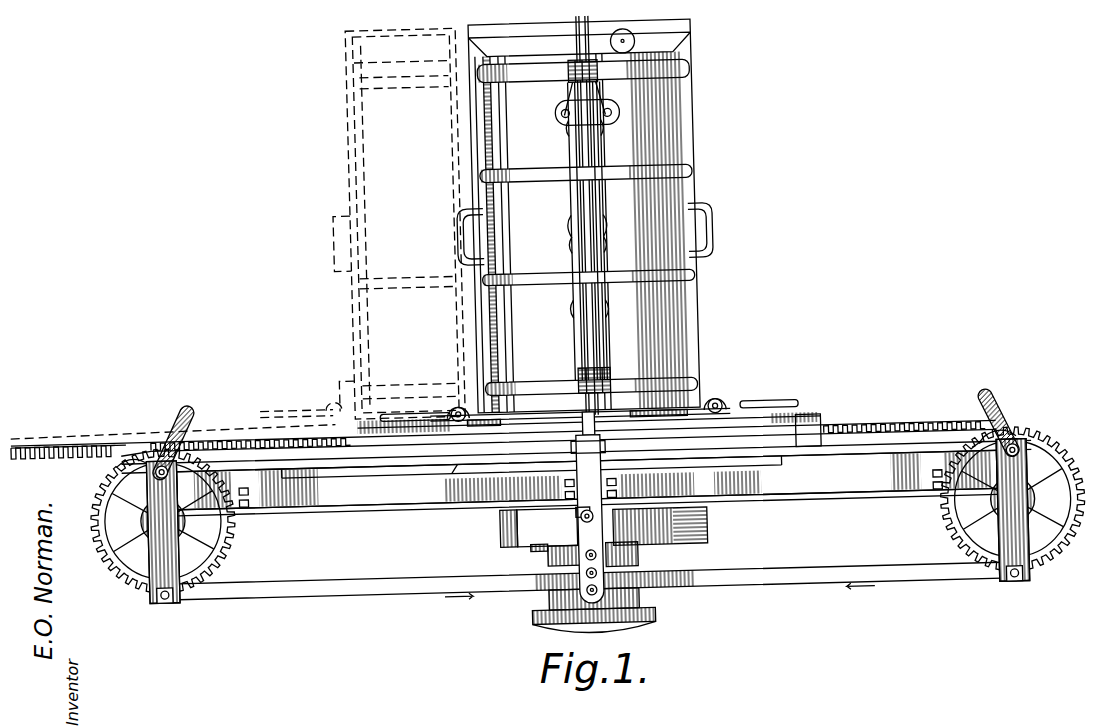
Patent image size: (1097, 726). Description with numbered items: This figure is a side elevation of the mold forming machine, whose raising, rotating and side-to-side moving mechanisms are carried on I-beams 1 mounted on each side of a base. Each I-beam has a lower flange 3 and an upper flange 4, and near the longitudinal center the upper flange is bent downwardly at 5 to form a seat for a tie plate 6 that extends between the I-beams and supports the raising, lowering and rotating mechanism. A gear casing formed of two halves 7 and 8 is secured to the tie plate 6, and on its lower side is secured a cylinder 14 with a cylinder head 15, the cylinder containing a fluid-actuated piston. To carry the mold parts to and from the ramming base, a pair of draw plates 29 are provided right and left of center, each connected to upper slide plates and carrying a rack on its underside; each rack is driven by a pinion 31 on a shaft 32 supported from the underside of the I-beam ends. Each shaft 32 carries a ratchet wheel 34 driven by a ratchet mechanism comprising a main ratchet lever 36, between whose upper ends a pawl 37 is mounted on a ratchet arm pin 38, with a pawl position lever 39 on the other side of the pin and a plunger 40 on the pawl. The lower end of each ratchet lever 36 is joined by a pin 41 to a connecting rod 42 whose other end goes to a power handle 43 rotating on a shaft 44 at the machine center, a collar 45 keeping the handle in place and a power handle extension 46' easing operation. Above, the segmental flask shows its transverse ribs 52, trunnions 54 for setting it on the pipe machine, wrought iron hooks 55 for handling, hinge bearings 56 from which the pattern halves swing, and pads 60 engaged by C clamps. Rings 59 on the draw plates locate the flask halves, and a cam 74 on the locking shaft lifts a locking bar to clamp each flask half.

The I-beam 1 is at (855, 446).
The lower flange 3 is at (352, 506).
The upper flange 4 is at (362, 463).
The downwardly bent portion of upper flange 5 is at (438, 472).
The tie plate 6 is at (455, 458).
The gear casing half 7 is at (694, 530).
The gear casing half 8 is at (487, 530).
The cylinder 14 is at (640, 600).
The cylinder head 15 is at (630, 630).
The draw plate 29 is at (800, 428).
The pinion 31 is at (108, 566).
The shaft 32 is at (165, 512).
The ratchet wheel 34 is at (120, 500).
The main ratchet lever 36 is at (150, 590).
The pawl 37 is at (108, 453).
The ratchet arm pin 38 is at (148, 454).
The pawl position lever 39 is at (180, 410).
The plunger 40 is at (95, 536).
The pin 41 is at (158, 592).
The connecting rod 42 is at (358, 590).
The power handle 43 is at (589, 460).
The shaft 44 is at (568, 519).
The collar 45 is at (563, 512).
The power handle extension 46' is at (557, 440).
The transverse ribs 52 is at (690, 76).
The trunnions 54 is at (626, 40).
The wrought iron hooks 55 is at (458, 232).
The hinge bearings 56 is at (569, 80).
The rings 59 is at (736, 404).
The pads 60 is at (598, 100).
The cam 74 is at (443, 402).